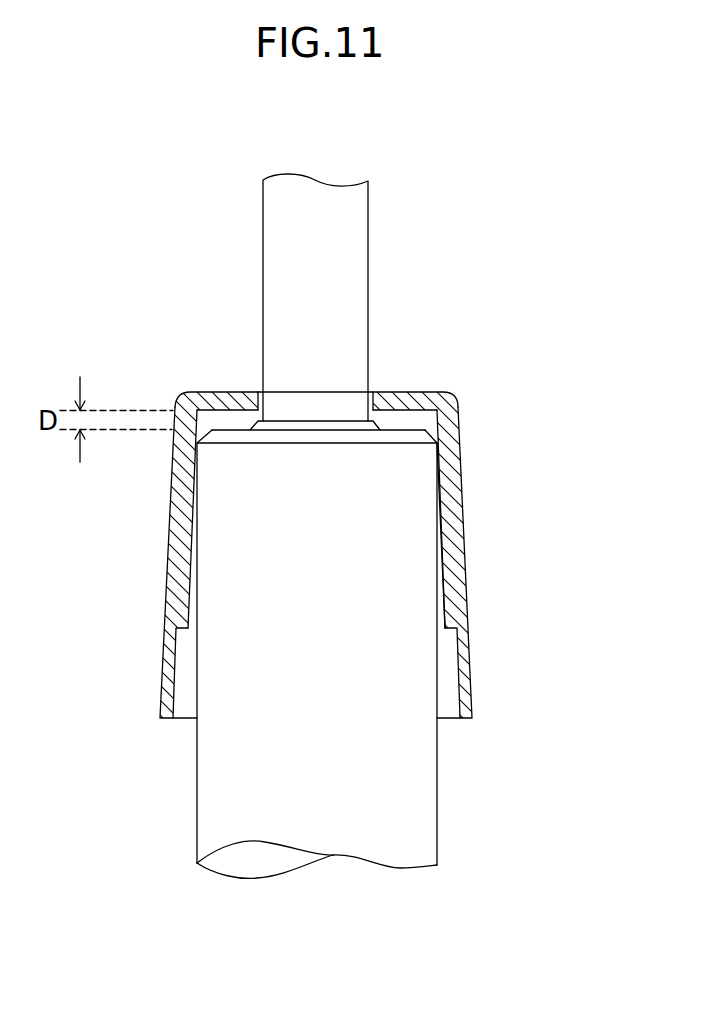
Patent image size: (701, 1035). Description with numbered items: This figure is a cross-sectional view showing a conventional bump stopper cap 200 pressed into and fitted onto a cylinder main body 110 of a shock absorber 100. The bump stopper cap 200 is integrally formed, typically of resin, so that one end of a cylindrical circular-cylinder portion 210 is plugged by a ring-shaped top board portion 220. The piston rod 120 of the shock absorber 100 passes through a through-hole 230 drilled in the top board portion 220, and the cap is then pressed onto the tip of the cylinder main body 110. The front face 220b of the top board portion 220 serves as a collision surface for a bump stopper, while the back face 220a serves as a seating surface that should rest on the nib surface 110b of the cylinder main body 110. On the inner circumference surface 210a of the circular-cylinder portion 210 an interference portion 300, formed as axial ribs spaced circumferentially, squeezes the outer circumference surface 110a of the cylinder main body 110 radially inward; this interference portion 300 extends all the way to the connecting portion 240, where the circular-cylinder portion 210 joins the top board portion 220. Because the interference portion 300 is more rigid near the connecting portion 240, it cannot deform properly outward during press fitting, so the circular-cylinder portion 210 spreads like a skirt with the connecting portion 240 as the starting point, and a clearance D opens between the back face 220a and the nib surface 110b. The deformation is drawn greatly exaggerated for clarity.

The shock absorber 100 is at (310, 526).
The cylinder main body 110 is at (363, 608).
The outer circumference surface 110a is at (437, 778).
The nib surface 110b is at (398, 428).
The piston rod 120 is at (368, 226).
The bump stopper cap 200 is at (350, 505).
The circular-cylinder portion 210 is at (367, 562).
The inner circumference surface 210a is at (469, 701).
The top board portion 220 is at (351, 454).
The back face 220a is at (236, 418).
The front face 220b is at (213, 391).
The through-hole 230 is at (371, 407).
The connecting portion 240 is at (447, 412).
The interference portion 300 is at (449, 562).